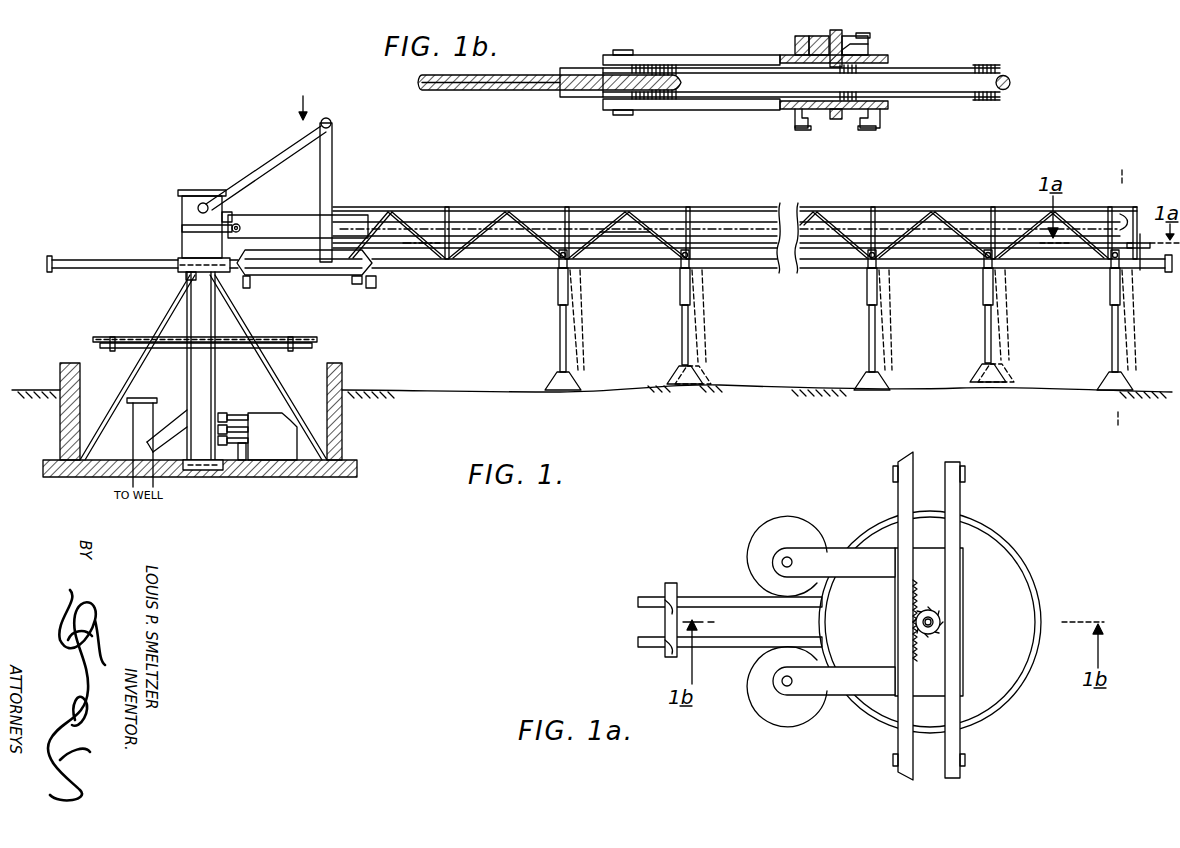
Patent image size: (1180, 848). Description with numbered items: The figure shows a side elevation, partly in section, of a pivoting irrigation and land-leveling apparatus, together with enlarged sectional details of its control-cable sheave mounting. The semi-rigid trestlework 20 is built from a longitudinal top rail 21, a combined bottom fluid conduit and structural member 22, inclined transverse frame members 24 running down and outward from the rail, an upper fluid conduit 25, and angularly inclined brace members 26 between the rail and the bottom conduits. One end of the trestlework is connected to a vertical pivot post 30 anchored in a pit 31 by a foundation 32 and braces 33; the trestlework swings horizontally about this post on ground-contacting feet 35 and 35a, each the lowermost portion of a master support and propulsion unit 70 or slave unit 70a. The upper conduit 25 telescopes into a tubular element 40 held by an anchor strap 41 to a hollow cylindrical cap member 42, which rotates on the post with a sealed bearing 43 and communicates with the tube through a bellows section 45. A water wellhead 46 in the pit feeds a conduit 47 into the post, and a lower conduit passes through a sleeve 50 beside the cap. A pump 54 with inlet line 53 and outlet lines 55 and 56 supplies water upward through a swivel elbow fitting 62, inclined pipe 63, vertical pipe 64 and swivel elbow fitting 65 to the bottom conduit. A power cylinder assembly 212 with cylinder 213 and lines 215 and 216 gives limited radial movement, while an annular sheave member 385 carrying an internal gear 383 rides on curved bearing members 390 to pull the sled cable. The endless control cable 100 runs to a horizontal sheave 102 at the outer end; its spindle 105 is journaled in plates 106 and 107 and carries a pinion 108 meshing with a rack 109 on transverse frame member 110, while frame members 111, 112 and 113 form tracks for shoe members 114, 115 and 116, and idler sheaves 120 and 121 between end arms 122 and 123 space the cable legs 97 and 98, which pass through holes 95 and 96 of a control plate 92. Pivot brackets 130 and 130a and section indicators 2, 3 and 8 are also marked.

In FIG. 1, the section line 2- 2 is at (170, 114).
In FIG. 1, the section line 3- 3 is at (1122, 144).
In FIG. 1, the section line 8- 8 is at (90, 250).
In FIG. 1, the semi-rigid trestlework 20 is at (601, 200).
In FIG. 1, the longitudinal top rail 21 is at (670, 210).
In FIG. 1, the combined bottom fluid conduit and structural member 22 is at (629, 268).
In FIG. 1, the inclined transverse frame member 24 is at (449, 214).
In FIG. 1, the upper fluid conduit 25 is at (626, 222).
In FIG. 1, the angularly inclined brace member 26 is at (500, 222).
In FIG. 1, the vertical pivot post 30 is at (232, 328).
In FIG. 1, the pit 31 is at (352, 424).
In FIG. 1, the foundation 32 is at (344, 452).
In FIG. 1, the brace 33 is at (170, 303).
In FIG. 1, the ground contacting foot or float member 35 is at (564, 390).
In FIG. 1, the ground contacting foot or float member 35a is at (992, 384).
In FIG. 1, the tubular element 40 is at (290, 222).
In FIG. 1, the anchor strap 41 is at (182, 229).
In FIG. 1, the hollow cylindrical cap member 42 is at (190, 208).
In FIG. 1, the sealed bearing 43 is at (186, 276).
In FIG. 1, the bellows section 45 is at (227, 218).
In FIG. 1, the water wellhead 46 is at (138, 420).
In FIG. 1, the conduit 47 is at (172, 410).
In FIG. 1, the sleeve 50 is at (214, 266).
In FIG. 1, the inlet line 53 is at (242, 462).
In FIG. 1, the pump 54 is at (284, 464).
In FIG. 1, the outlet line 55 is at (242, 430).
In FIG. 1, the outlet line 56 is at (232, 413).
In FIG. 1, the swivel elbow fitting 62 is at (203, 203).
In FIG. 1, the inclined pipe 63 is at (265, 168).
In FIG. 1, the generally vertical pipe 64 is at (333, 170).
In FIG. 1, the swivel elbow fitting 65 is at (332, 123).
In FIG. 1, the trestlework support and propulsion unit 70 is at (700, 308).
In FIG. 1, the trestlework support and propulsion unit 70a is at (560, 319).
In FIG. 1a, the control plate 92 is at (668, 590).
In FIG. 1a, the hole 95 is at (668, 614).
In FIG. 1a, the hole 96 is at (668, 652).
In FIG. 1b, the cable leg 97 is at (528, 76).
In FIG. 1a, the cable leg 97 is at (720, 598).
In FIG. 1a, the cable leg 98 is at (726, 648).
In FIG. 1, the endless control cable 100 is at (818, 248).
In FIG. 1b, the endless control cable 100 is at (490, 94).
In FIG. 1a, the endless control cable 100 is at (690, 590).
In FIG. 1, the horizontal sheave 102 is at (1138, 250).
In FIG. 1b, the horizontal sheave 102 is at (996, 92).
In FIG. 1a, the horizontal sheave 102 is at (1006, 555).
In FIG. 1b, the sheave spindle 105 is at (836, 111).
In FIG. 1a, the sheave spindle 105 is at (940, 617).
In FIG. 1b, the plate 106 is at (890, 106).
In FIG. 1b, the plate 107 is at (890, 59).
In FIG. 1a, the plate 107 is at (936, 591).
In FIG. 1b, the pinion 108 is at (843, 34).
In FIG. 1a, the pinion 108 is at (940, 627).
In FIG. 1b, the rack 109 is at (818, 38).
In FIG. 1a, the rack 109 is at (918, 651).
In FIG. 1b, the trestlework transverse frame member 110 is at (795, 44).
In FIG. 1a, the trestlework transverse frame member 110 is at (906, 493).
In FIG. 1b, the transverse frame member 111 is at (876, 44).
In FIG. 1a, the transverse frame member 111 is at (960, 504).
In FIG. 1b, the transverse frame member 112 is at (868, 130).
In FIG. 1b, the transverse frame member 113 is at (808, 130).
In FIG. 1b, the shoe member 114 is at (902, 52).
In FIG. 1b, the shoe member 115 is at (878, 122).
In FIG. 1b, the shoe member 116 is at (796, 118).
In FIG. 1b, the idler sheave 120 is at (576, 98).
In FIG. 1a, the idler sheave 120 is at (784, 530).
In FIG. 1a, the idler sheave 121 is at (784, 716).
In FIG. 1b, the end arm 122 is at (663, 56).
In FIG. 1b, the end arm 123 is at (682, 110).
In FIG. 1a, the end arm 123 is at (833, 555).
In FIG. 1, the leg pivot 130 is at (684, 276).
In FIG. 1, the leg pivot 130a is at (560, 271).
In FIG. 1, the power cylinder assembly 212 is at (348, 284).
In FIG. 1, the cylinder 213 is at (316, 276).
In FIG. 1, the inlet line 215 is at (250, 280).
In FIG. 1, the outlet line 216 is at (376, 280).
In FIG. 1, the internal gear 383 is at (104, 346).
In FIG. 1, the annular sheave member 385 is at (114, 337).
In FIG. 1, the curved bearing member 390 is at (114, 351).